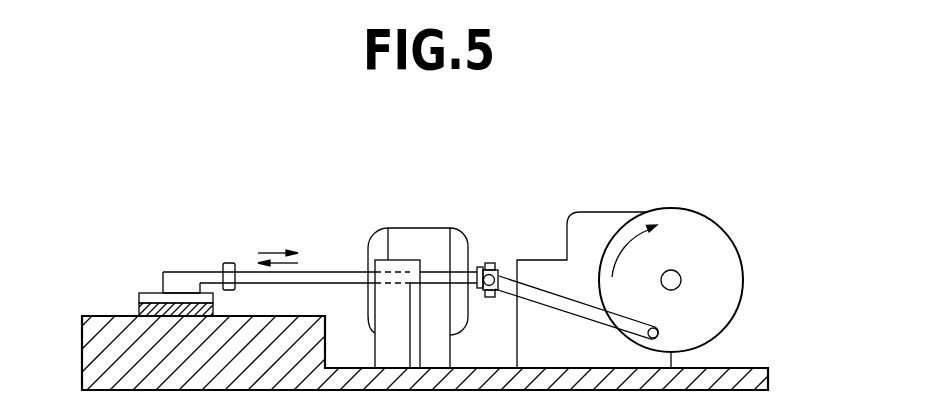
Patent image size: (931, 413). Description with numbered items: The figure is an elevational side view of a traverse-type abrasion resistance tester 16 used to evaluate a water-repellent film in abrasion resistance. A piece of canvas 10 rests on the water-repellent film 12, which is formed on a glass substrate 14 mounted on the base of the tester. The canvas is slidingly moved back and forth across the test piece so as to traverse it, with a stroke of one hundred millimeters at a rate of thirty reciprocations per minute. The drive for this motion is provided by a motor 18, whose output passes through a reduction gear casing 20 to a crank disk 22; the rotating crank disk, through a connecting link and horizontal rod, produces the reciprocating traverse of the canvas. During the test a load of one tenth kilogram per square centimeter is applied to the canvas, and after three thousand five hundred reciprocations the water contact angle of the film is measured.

The piece of canvas 10 is at (162, 285).
The water-repellent film 12 is at (140, 296).
The glass substrate 14 is at (140, 307).
The traverse-type abrasion resistance tester 16 is at (672, 190).
The motor 18 is at (417, 228).
The reduction gear casing 20 is at (568, 230).
The crank disk 22 is at (735, 245).